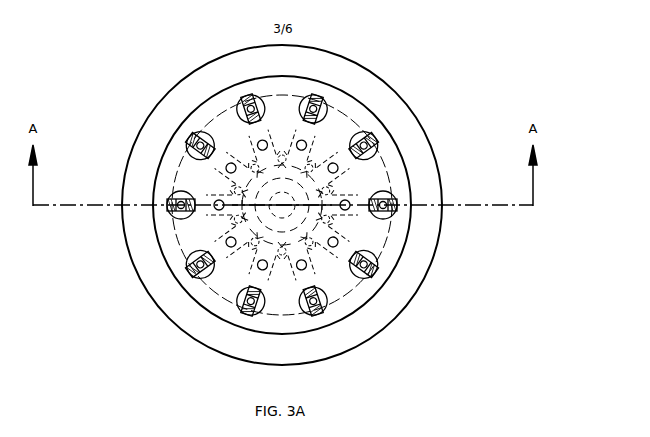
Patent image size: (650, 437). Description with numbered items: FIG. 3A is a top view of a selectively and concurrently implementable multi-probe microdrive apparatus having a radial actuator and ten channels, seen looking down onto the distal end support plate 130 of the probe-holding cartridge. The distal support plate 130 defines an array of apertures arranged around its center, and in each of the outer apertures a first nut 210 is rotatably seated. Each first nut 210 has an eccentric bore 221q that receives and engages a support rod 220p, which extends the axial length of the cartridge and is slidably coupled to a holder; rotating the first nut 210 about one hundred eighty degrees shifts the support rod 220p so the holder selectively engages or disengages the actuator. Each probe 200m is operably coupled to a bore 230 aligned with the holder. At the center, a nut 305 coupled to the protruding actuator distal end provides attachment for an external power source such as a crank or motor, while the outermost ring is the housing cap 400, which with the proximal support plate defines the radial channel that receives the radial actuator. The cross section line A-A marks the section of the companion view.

The distal end support plate 130 is at (220, 115).
The bore 230 is at (186, 146).
The nut 305 is at (237, 210).
The first nut 210 is at (187, 262).
The eccentric bore 221q is at (235, 303).
The support rod 220p is at (250, 96).
The probe 200m is at (338, 120).
The housing cap 400 is at (418, 253).